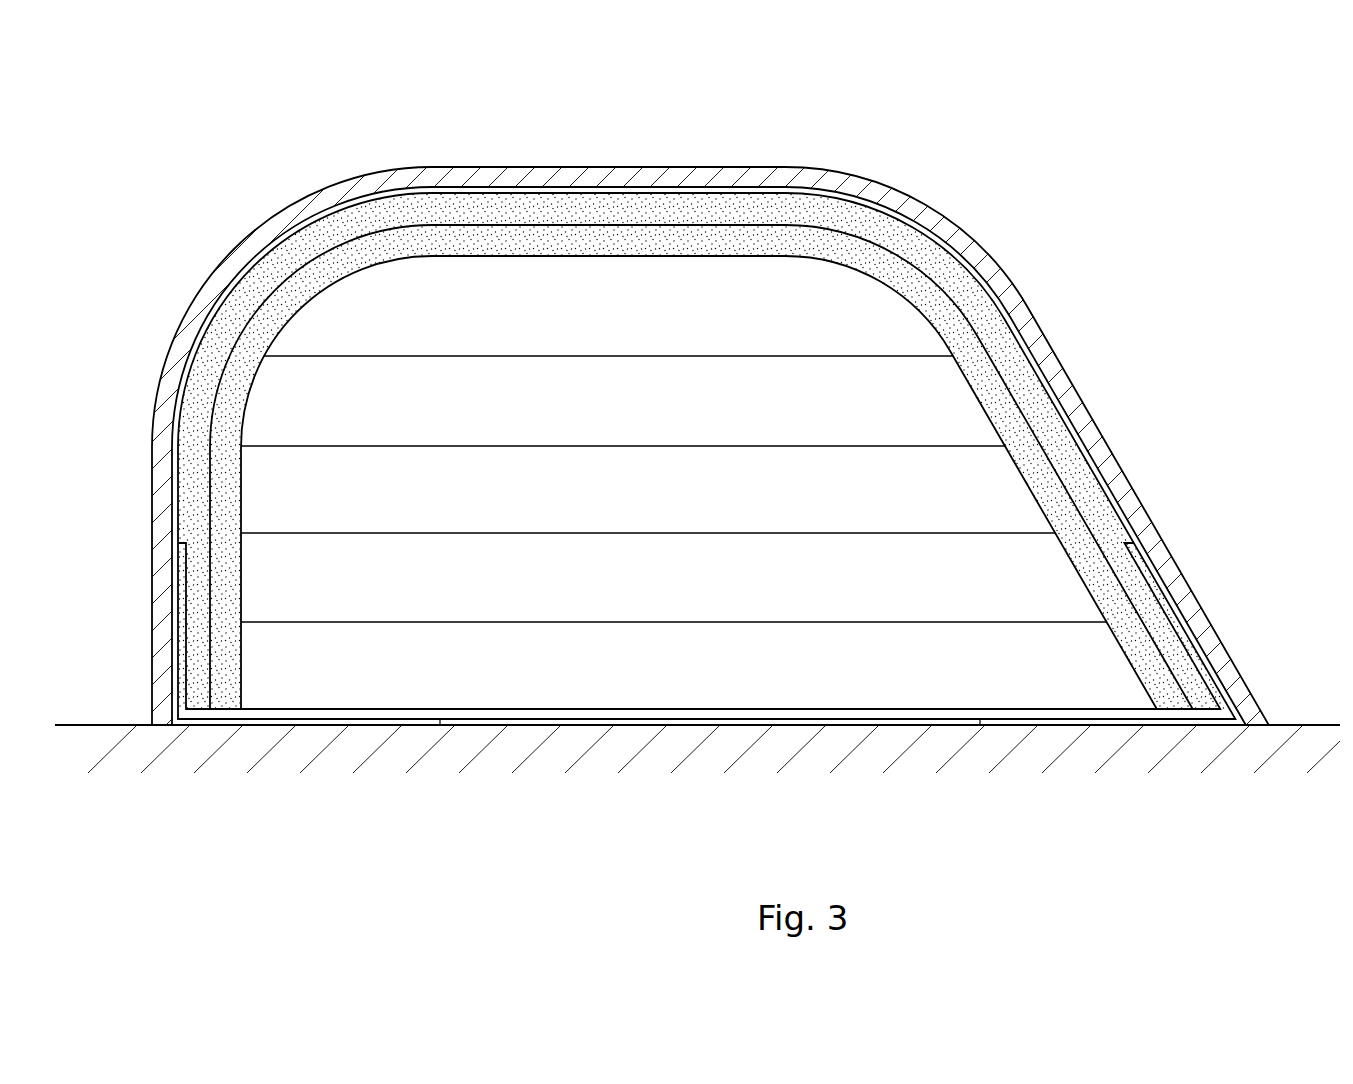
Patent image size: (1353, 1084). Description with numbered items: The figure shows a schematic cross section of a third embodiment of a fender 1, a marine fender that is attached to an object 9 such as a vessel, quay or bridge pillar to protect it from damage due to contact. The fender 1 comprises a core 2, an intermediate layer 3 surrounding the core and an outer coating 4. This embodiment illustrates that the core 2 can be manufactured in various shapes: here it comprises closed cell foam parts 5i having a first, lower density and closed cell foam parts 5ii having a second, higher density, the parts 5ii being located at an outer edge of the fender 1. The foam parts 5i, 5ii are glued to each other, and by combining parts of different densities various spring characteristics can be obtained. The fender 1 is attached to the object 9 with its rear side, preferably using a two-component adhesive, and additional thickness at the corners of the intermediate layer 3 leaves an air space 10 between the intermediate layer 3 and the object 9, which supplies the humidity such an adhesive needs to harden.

The fender 1 is at (738, 453).
The core 2 is at (400, 673).
The intermediate layer 3 is at (1007, 712).
The coating 4 is at (648, 175).
The closed cell foam parts having a first density 5i is at (878, 314).
The closed cell foam parts having a second density 5ii is at (197, 687).
The object 9 is at (88, 758).
The air space 10 is at (645, 720).